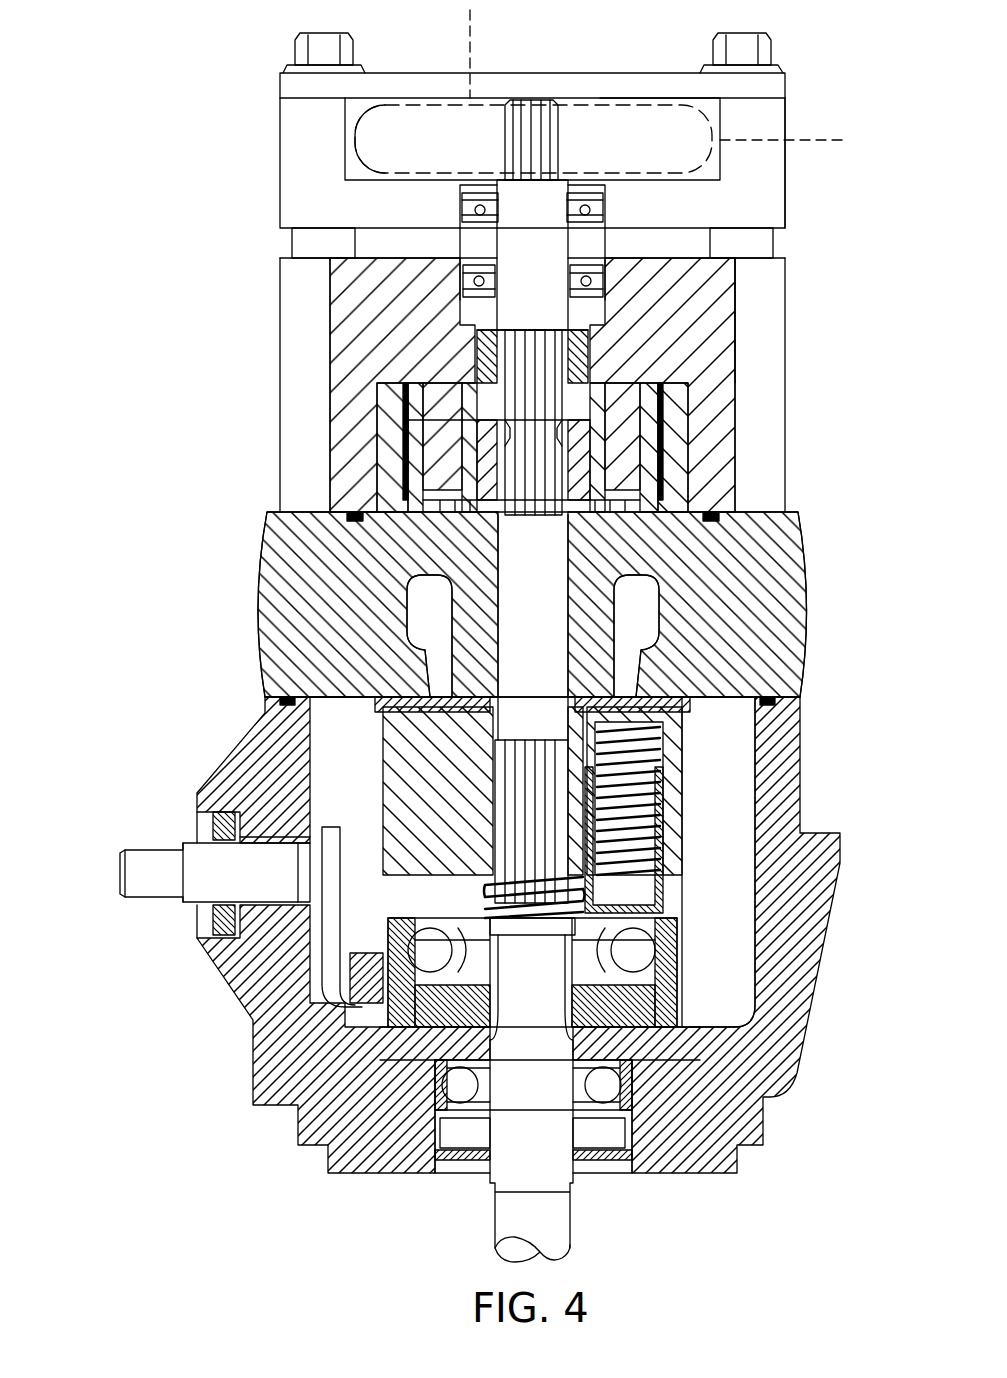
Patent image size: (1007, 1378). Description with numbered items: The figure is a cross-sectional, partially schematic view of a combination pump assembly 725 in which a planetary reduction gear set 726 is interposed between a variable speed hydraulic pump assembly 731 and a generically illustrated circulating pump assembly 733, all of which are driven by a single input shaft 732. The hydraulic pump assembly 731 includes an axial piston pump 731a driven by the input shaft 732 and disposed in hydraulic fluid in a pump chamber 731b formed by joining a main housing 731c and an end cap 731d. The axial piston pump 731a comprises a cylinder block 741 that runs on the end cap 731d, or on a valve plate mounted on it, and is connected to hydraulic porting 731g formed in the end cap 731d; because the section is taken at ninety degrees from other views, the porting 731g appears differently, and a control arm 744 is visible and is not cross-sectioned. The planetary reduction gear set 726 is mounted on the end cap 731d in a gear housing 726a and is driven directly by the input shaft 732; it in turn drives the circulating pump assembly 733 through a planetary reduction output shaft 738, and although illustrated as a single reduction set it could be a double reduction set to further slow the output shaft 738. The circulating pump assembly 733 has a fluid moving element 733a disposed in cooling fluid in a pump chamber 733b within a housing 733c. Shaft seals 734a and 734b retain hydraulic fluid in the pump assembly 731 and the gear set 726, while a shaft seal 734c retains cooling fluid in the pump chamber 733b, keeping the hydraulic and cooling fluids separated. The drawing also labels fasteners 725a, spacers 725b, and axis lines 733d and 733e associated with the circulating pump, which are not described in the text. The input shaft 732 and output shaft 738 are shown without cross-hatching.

The combination pump assembly 725 is at (155, 86).
The bolt 725a is at (320, 33).
The spacer 725b is at (292, 243).
The planetary reduction gear set 726 is at (243, 391).
The gear housing 726a is at (710, 352).
The variable speed hydraulic pump assembly 731 is at (193, 661).
The axial piston pump 731a is at (347, 797).
The pump chamber 731b is at (713, 797).
The main housing 731c is at (805, 920).
The end cap 731d is at (770, 637).
The hydraulic porting 731g is at (425, 605).
The input shaft 732 is at (567, 1238).
The circulating pump assembly 733 is at (245, 136).
The fluid moving element 733a is at (630, 106).
The pump chamber 733b is at (661, 100).
The housing 733c is at (786, 117).
The center axis 733d is at (473, 30).
The transverse axis 733e is at (828, 142).
The shaft seal 734a is at (600, 1145).
The shaft seal 734b is at (588, 265).
The shaft seal 734c is at (463, 212).
The planetary reduction output shaft 738 is at (556, 277).
The cylinder block 741 is at (460, 811).
The control arm 744 is at (150, 900).